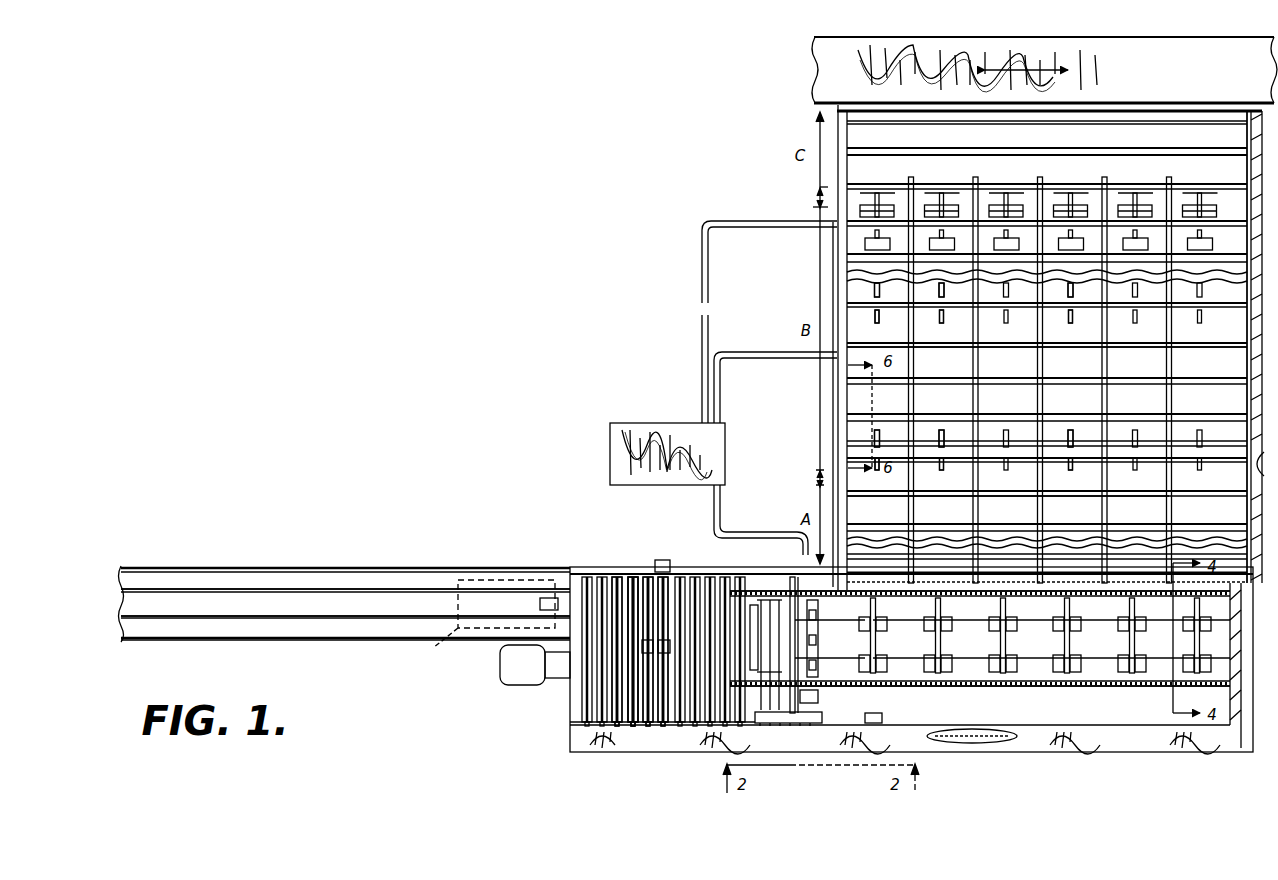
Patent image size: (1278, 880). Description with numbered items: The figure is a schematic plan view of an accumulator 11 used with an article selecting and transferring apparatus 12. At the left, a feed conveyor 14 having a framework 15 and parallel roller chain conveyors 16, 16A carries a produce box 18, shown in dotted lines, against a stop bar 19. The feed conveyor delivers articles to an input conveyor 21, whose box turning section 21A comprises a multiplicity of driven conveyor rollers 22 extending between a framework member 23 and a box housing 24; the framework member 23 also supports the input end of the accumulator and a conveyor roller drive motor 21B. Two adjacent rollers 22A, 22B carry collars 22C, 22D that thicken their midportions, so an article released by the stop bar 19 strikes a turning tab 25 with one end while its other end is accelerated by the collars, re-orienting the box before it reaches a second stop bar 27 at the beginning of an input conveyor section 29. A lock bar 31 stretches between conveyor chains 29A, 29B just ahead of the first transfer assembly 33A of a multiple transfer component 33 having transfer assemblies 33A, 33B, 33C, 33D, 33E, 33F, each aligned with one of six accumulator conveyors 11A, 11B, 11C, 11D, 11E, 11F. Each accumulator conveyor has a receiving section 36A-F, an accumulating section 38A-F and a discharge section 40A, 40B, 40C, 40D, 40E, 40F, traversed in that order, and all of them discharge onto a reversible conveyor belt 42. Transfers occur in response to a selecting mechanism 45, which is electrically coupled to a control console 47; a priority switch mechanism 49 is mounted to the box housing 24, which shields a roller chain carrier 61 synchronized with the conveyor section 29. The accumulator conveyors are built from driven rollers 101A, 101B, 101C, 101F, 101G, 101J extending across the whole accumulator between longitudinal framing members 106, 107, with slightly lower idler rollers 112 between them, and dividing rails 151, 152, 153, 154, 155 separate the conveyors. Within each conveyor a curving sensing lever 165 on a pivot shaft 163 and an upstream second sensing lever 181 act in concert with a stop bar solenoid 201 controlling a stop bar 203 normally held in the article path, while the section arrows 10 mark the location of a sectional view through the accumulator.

The processing apparatus 10 is at (1222, 513).
The accumulator 11 is at (813, 296).
The accumulator conveyor 11A is at (879, 506).
The accumulator conveyor 11B is at (943, 506).
The accumulator conveyor 11C is at (1007, 506).
The accumulator conveyor 11D is at (1072, 506).
The accumulator conveyor 11E is at (1136, 506).
The accumulator conveyor 11F is at (1182, 475).
The article selecting and transferring apparatus 12 is at (631, 603).
The feed conveyor 14 is at (215, 608).
The framework 15 is at (196, 642).
The roller chain conveyor 16 is at (285, 620).
The roller chain conveyor 16A is at (308, 589).
The produce box 18 is at (440, 649).
The stop bar 19 is at (530, 604).
The input conveyor 21 is at (617, 693).
The box turning section 21A is at (649, 678).
The conveyor roller drive motor 21B is at (498, 673).
The conveyor rollers 22 is at (634, 687).
The conveyor roller 22A is at (648, 717).
The conveyor roller 22B is at (665, 710).
The collar 22C is at (642, 643).
The collar 22D is at (664, 640).
The framework member 23 is at (725, 576).
The box housing 24 is at (1106, 734).
The turning tab 25 is at (678, 570).
The second stop bar 27 is at (757, 630).
The input conveyor section 29 is at (1011, 689).
The conveyor chain 29A is at (888, 687).
The conveyor chain 29B is at (958, 599).
The lock bar 31 is at (818, 629).
The multiple transfer component 33 is at (974, 670).
The transfer assembly 33A is at (863, 637).
The transfer assembly 33B is at (926, 645).
The transfer assembly 33C is at (1035, 645).
The transfer assembly 33D is at (1098, 645).
The transfer assembly 33E is at (1150, 645).
The transfer assembly 33F is at (1223, 645).
The receiving sections 36A-F is at (855, 514).
The accumulating sections 38A-F is at (860, 326).
The discharge section 40A is at (868, 133).
The discharge section 40B is at (935, 137).
The discharge section 40C is at (1003, 137).
The discharge section 40D is at (1067, 137).
The discharge section 40E is at (1145, 137).
The discharge section 40F is at (1212, 137).
The reversible conveyor belt 42 is at (835, 61).
The selecting mechanism 45 is at (800, 725).
The control console 47 is at (606, 450).
The priority switch mechanism 49 is at (874, 712).
The roller chain carrier 61 is at (994, 743).
The driven roller 101A is at (1050, 179).
The driven roller 101B is at (1132, 147).
The driven roller 101C is at (1192, 116).
The guide rail 101F is at (1104, 460).
The guide rail 101G is at (1028, 378).
The guide rail 101J is at (1196, 221).
The longitudinal framing member 106 is at (815, 187).
The longitudinal framing member 107 is at (1254, 159).
The idler roller 112 is at (1028, 340).
The dividing rail 151 is at (916, 362).
The dividing rail 152 is at (978, 332).
The dividing rail 153 is at (1050, 332).
The dividing rail 154 is at (1115, 332).
The dividing rail 155 is at (1170, 365).
The pivot shaft 163 is at (1048, 438).
The curving sensing lever 165 is at (942, 437).
The second sensing lever 181 is at (852, 289).
The stop bar solenoid 201 is at (936, 203).
The stop bar 203 is at (888, 203).